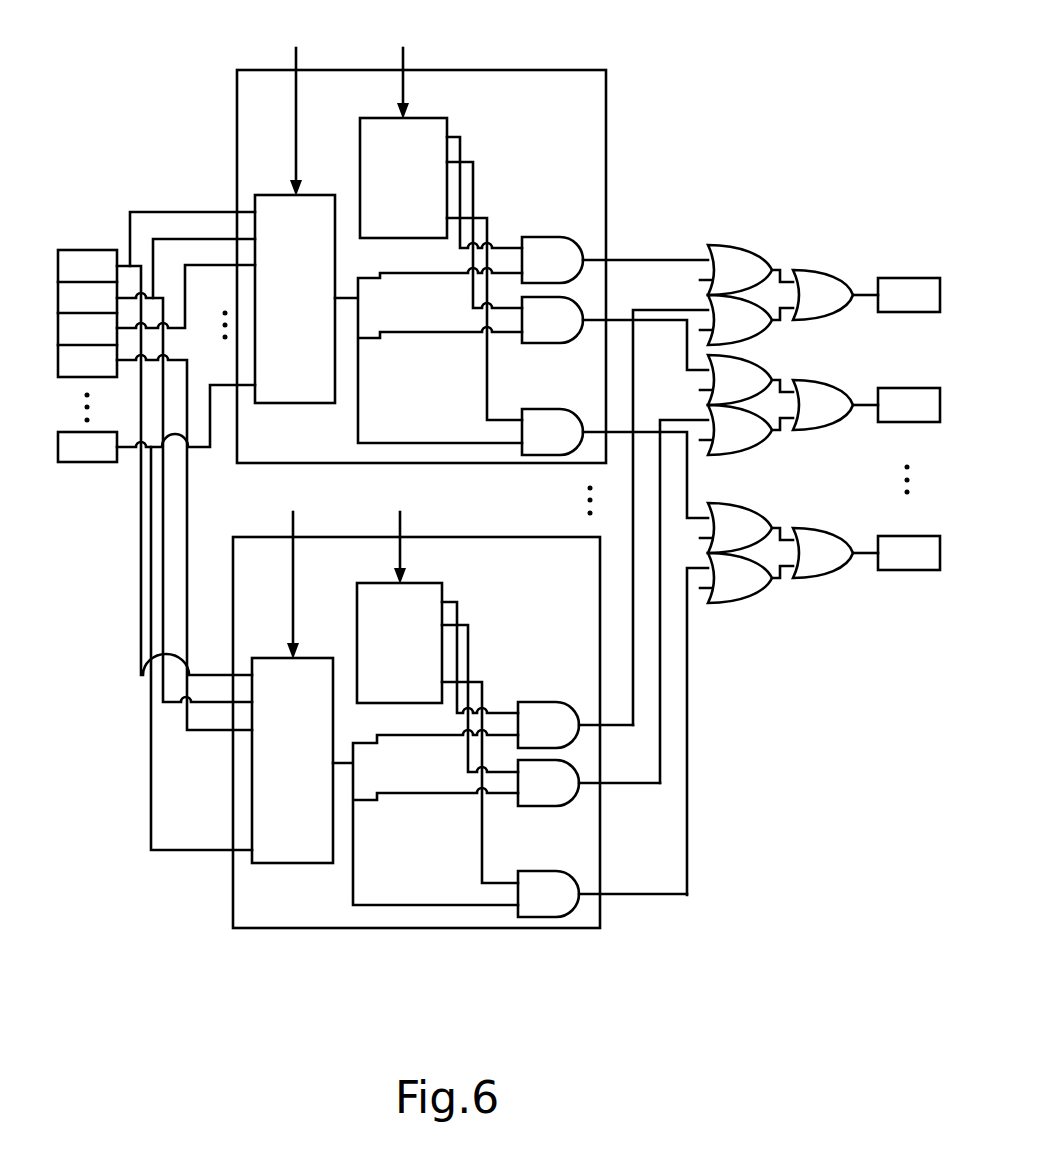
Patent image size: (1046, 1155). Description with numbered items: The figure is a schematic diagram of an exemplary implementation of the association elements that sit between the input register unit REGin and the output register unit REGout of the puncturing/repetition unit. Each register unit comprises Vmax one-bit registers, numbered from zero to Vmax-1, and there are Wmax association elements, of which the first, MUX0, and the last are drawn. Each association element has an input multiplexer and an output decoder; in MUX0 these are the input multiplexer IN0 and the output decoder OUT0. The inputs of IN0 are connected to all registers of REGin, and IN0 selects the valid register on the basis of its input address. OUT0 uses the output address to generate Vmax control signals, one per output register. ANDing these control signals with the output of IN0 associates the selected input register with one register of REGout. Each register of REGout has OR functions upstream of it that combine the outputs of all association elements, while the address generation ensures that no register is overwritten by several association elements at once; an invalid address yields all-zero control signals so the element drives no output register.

The input register unit REGin is at (87, 248).
The last register / last control signal index Vmax-1 is at (83, 463).
The association element MUX0 is at (632, 48).
The input multiplexer IN0 is at (295, 299).
The output decoder OUT0 is at (403, 178).
The output register unit REGout is at (908, 278).